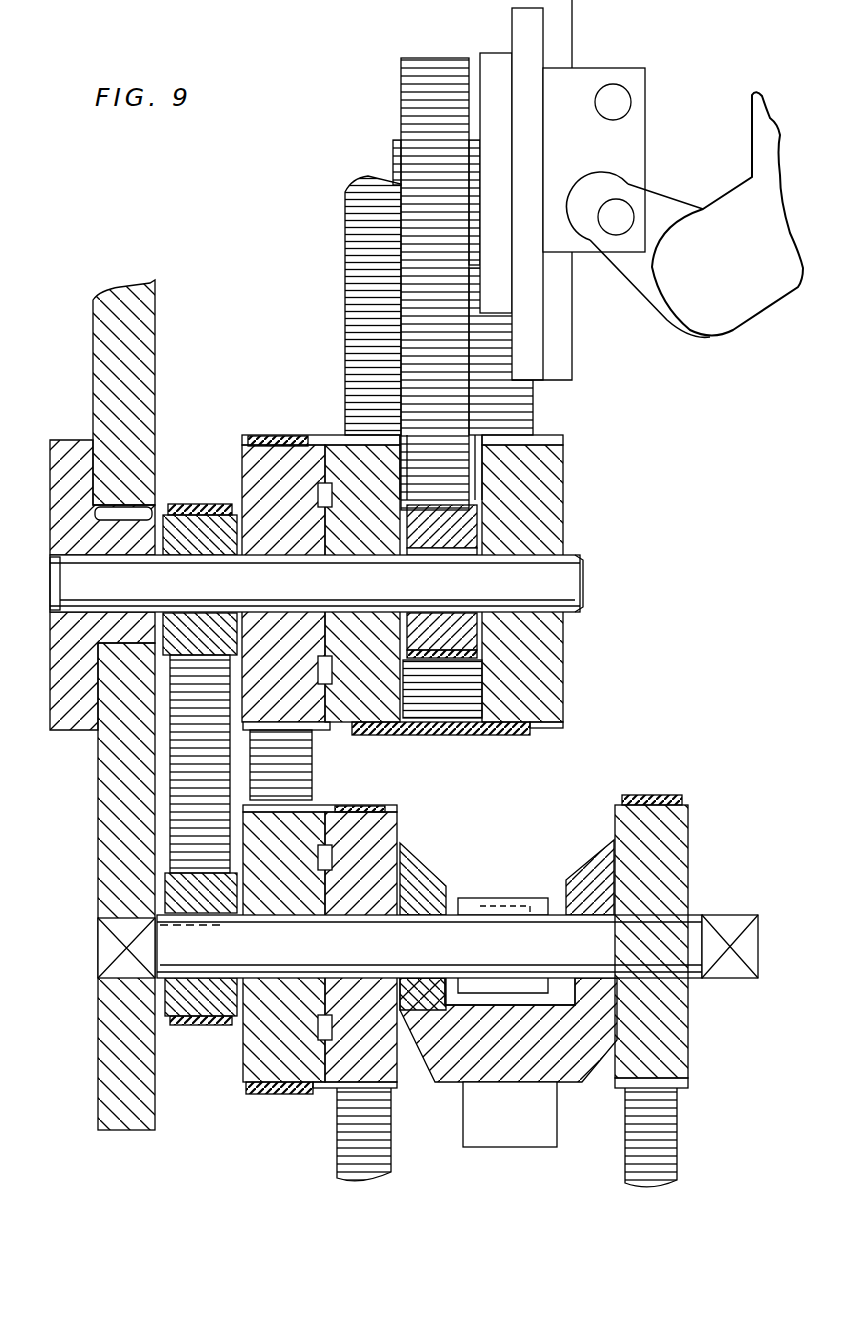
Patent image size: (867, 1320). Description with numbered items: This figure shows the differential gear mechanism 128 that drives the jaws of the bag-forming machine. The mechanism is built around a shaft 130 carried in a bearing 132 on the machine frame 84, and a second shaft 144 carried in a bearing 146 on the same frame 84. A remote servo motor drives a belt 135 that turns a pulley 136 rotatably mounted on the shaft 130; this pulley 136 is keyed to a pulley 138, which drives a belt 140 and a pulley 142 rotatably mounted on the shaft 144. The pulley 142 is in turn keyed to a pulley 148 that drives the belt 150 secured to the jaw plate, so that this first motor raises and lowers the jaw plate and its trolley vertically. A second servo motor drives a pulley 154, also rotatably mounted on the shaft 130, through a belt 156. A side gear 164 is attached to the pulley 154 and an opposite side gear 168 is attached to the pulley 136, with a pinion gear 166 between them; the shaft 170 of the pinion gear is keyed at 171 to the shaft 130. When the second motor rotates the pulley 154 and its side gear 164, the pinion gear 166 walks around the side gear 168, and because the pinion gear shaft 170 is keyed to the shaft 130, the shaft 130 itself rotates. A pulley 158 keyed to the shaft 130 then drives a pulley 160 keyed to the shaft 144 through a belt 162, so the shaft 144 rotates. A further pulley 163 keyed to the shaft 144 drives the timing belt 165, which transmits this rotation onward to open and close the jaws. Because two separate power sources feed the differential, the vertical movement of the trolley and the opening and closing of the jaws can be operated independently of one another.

The machine frame 84 is at (108, 330).
The differential gear mechanism 128 is at (84, 1003).
The shaft 130 is at (729, 925).
The bearing 132 is at (104, 940).
The belt 135 is at (355, 1148).
The pulley 136 is at (385, 822).
The pulley 138 is at (262, 1082).
The belt 140 is at (300, 771).
The pulley 142 is at (255, 465).
The shaft 144 is at (583, 576).
The bearing 146 is at (76, 740).
The pulley 148 is at (345, 460).
The belt 150 is at (515, 736).
The pulley 154 is at (675, 1024).
The belt 156 is at (660, 1101).
The pulley 158 is at (164, 1005).
The pulley 160 is at (195, 520).
The belt 162 is at (180, 806).
The pulley 163 is at (470, 630).
The side gear 164 is at (590, 870).
The timing belt 165 is at (450, 414).
The pinion gear 166 is at (570, 1085).
The side gear 168 is at (412, 872).
The pinion gear shaft 170 is at (474, 1133).
The key 171 is at (522, 898).